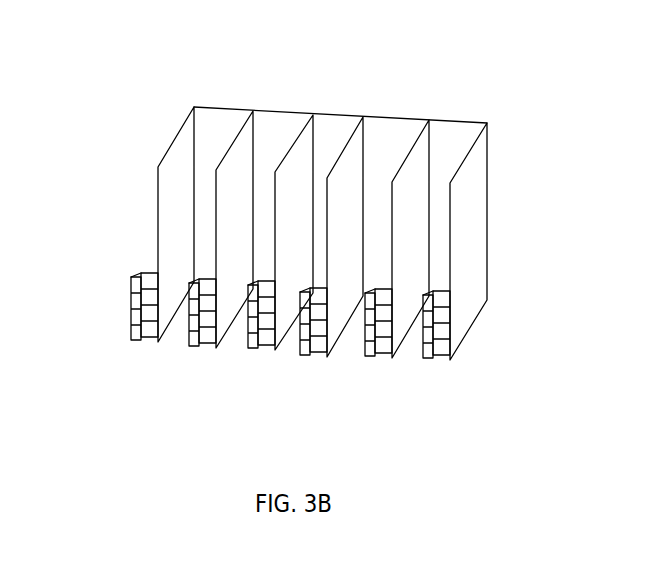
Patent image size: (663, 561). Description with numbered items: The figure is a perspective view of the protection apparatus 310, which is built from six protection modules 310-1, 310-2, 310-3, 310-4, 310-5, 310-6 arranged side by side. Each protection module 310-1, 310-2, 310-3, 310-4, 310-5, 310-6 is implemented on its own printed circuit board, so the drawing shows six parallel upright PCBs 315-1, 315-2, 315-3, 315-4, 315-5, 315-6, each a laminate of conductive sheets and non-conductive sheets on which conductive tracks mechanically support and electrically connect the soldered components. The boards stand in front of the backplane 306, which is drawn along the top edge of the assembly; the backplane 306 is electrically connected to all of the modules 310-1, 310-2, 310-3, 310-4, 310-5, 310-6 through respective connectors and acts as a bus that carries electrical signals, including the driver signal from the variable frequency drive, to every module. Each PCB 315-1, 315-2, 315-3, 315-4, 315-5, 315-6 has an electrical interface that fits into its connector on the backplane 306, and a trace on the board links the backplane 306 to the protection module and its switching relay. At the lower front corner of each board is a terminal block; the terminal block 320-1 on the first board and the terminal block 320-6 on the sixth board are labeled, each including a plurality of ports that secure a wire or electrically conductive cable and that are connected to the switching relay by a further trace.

The backplane 306 is at (267, 135).
The protection apparatus 310 is at (451, 38).
The protection module 310-1 is at (129, 255).
The protection module 310-2 is at (211, 244).
The protection module 310-3 is at (313, 261).
The protection module 310-4 is at (368, 245).
The protection module 310-5 is at (441, 268).
The protection module 310-6 is at (499, 274).
The printed circuit board 315-1 is at (168, 190).
The printed circuit board 315-2 is at (243, 145).
The printed circuit board 315-3 is at (298, 165).
The printed circuit board 315-4 is at (348, 175).
The printed circuit board 315-5 is at (415, 178).
The printed circuit board 315-6 is at (473, 193).
The terminal block 320-1 is at (145, 327).
The terminal block 320-6 is at (443, 300).